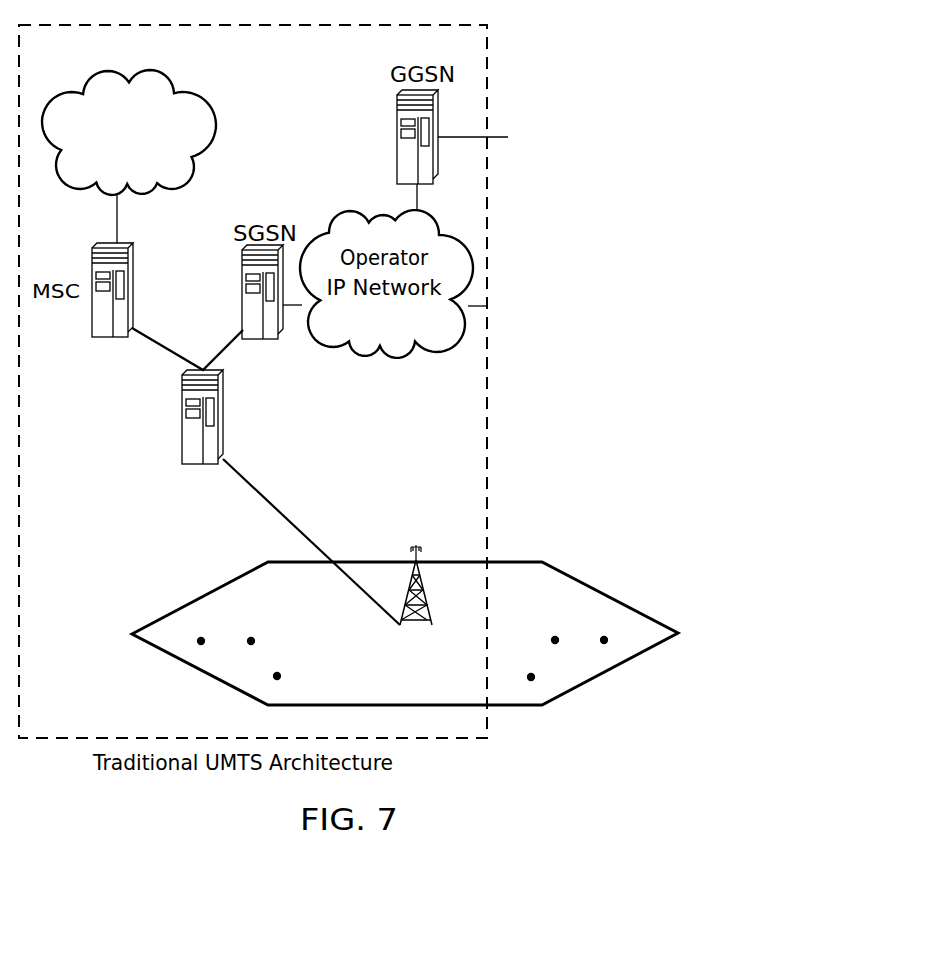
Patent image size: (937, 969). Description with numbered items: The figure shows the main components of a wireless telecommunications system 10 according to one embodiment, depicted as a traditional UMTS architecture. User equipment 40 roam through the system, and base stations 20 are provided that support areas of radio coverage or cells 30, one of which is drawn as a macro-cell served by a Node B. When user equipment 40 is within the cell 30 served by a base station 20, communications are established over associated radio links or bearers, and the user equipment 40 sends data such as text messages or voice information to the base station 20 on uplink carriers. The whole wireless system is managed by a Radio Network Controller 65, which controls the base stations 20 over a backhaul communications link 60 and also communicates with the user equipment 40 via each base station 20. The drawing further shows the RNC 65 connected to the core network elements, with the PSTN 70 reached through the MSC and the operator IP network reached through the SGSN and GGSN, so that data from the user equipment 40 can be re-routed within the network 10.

The wireless telecommunications system 10 is at (539, 61).
The base station 20 is at (404, 585).
The cell 30 is at (585, 584).
The user equipment 40 is at (277, 676).
The backhaul communications link 60 is at (262, 497).
The Radio Network Controller 65 is at (181, 440).
The PSTN 70 is at (213, 122).